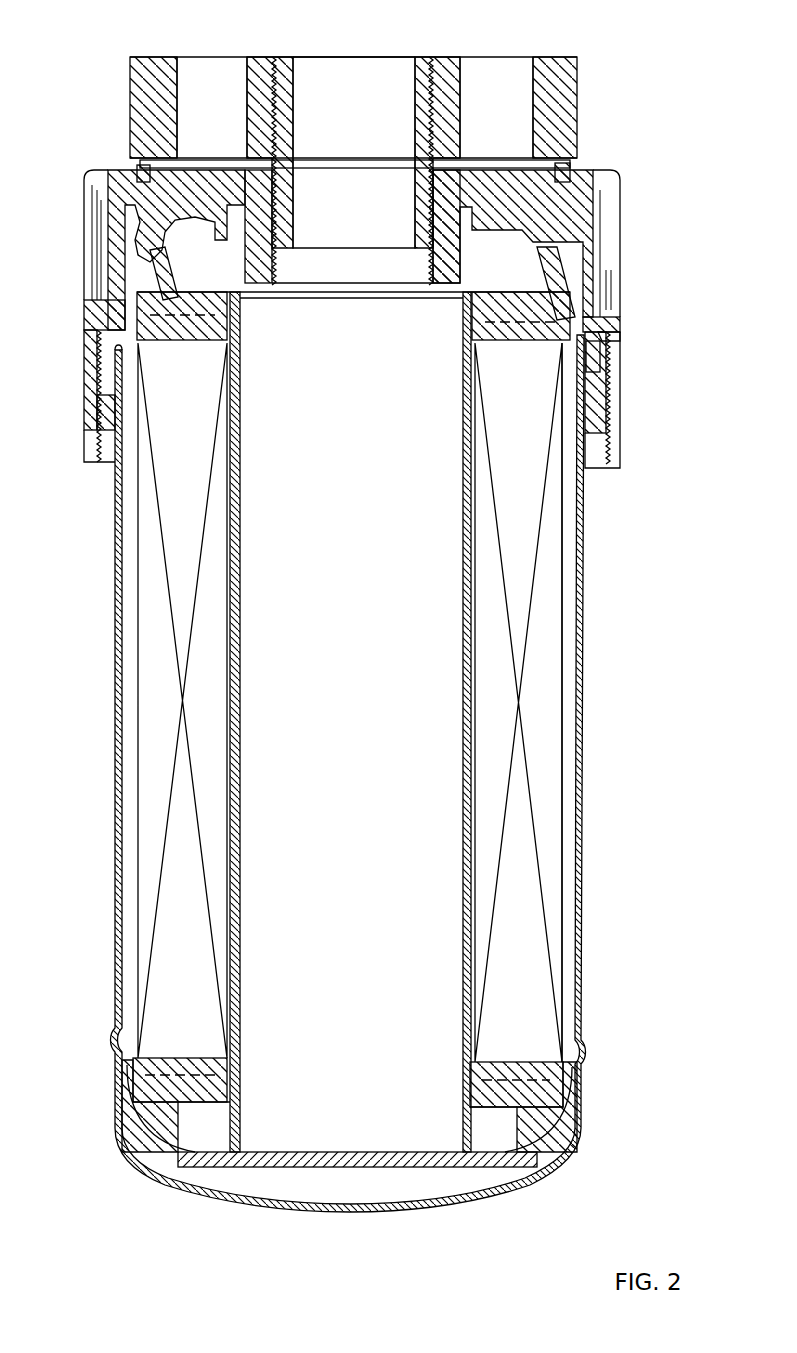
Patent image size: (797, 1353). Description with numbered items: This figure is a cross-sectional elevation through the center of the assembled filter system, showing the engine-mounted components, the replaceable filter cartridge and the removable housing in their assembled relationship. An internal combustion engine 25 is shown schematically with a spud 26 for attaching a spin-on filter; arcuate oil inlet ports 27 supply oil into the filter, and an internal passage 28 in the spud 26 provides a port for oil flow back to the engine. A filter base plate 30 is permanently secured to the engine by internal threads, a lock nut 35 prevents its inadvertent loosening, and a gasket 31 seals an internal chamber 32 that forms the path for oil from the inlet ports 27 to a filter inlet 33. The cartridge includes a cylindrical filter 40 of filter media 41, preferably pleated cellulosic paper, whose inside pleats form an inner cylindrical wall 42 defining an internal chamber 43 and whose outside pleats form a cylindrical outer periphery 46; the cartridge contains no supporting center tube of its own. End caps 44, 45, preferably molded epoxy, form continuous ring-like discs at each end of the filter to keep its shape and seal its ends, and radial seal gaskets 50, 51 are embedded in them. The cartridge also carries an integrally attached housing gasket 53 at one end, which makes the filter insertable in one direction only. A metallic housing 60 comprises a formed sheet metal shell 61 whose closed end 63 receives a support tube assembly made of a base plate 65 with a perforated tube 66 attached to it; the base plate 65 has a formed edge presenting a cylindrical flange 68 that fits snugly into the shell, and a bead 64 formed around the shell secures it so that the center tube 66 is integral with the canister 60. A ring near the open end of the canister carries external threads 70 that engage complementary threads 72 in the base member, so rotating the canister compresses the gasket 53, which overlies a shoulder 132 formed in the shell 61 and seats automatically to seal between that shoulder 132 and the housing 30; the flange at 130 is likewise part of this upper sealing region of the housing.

The internal combustion engine 25 is at (570, 76).
The spud 26 is at (415, 95).
The arcuate oil inlet ports 27 is at (212, 67).
The internal passage 28 is at (315, 62).
The filter base plate 30 is at (587, 193).
The gasket 31 is at (575, 170).
The internal chamber 32 is at (497, 165).
The filter inlet 33 is at (178, 182).
The lock nut 35 is at (412, 238).
The cylindrical filter 40 is at (577, 615).
The filter media 41 is at (535, 672).
The inner cylindrical wall 42 is at (463, 745).
The internal chamber 43 is at (354, 998).
The end cap 44 is at (505, 332).
The end cap 45 is at (528, 1060).
The outer periphery 46 is at (567, 745).
The radial seal gasket 50 is at (152, 275).
The radial seal gasket 51 is at (125, 1140).
The housing gasket 53 is at (600, 330).
The metallic housing 60 is at (584, 945).
The shell 61 is at (583, 830).
The closed end 63 is at (290, 1210).
The bead 64 is at (580, 1052).
The base plate 65 is at (405, 1162).
The perforated tube 66 is at (225, 1135).
The cylindrical flange 68 is at (570, 1086).
The external threads 70 is at (600, 412).
The threads 72 is at (598, 460).
The flange 130 is at (577, 320).
The shoulder 132 is at (598, 350).